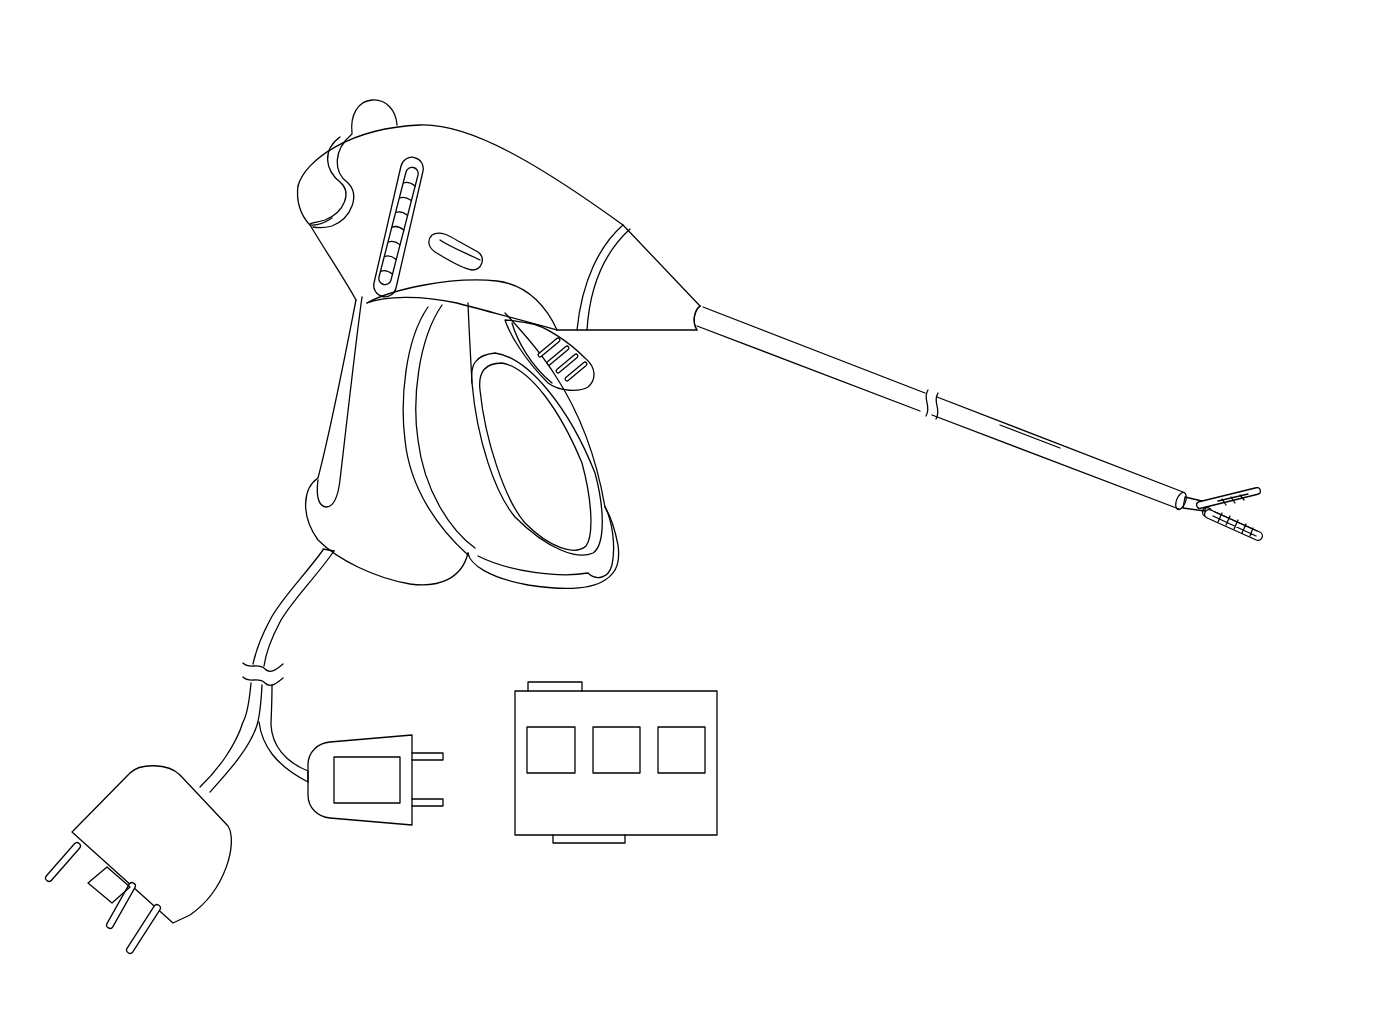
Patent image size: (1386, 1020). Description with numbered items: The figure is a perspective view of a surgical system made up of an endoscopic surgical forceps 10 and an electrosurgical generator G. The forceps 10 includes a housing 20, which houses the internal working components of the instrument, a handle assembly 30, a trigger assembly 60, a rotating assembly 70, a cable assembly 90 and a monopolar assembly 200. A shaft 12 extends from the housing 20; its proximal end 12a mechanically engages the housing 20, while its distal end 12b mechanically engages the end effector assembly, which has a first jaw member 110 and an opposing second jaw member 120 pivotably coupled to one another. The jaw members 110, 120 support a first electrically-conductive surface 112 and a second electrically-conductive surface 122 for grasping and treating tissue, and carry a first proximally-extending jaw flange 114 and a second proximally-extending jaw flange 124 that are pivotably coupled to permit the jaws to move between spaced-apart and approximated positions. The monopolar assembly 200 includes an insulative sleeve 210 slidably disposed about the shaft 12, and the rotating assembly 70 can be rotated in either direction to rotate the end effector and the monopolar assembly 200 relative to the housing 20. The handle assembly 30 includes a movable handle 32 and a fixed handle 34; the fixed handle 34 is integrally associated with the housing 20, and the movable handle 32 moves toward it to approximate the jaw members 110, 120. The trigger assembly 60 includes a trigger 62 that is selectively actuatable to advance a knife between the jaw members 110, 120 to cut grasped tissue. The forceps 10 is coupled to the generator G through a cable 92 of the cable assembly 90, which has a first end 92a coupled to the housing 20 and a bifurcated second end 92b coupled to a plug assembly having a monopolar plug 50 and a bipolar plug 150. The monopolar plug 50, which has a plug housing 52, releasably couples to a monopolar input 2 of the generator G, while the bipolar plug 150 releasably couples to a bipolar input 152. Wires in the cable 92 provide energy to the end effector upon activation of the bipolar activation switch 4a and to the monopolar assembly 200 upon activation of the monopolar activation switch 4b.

The forceps 10 is at (648, 136).
The monopolar input 2 is at (560, 683).
The bipolar activation switch 4a is at (316, 193).
The monopolar activation switch 4b is at (366, 99).
The shaft 12 is at (905, 385).
The proximal end of shaft 12a is at (703, 309).
The distal end of shaft 12b is at (1181, 511).
The housing 20 is at (423, 126).
The handle assembly 30 is at (387, 595).
The movable handle 32 is at (602, 503).
The fixed handle 34 is at (313, 491).
The monopolar plug 50 is at (392, 737).
The plug housing 52 is at (378, 798).
The trigger assembly 60 is at (606, 355).
The trigger 62 is at (592, 389).
The rotating assembly 70 is at (371, 233).
The cable assembly 90 is at (210, 711).
The cable 92 is at (278, 606).
The first end of cable 92a is at (324, 548).
The bifurcated second end of cable 92b is at (308, 794).
The first jaw member 110 is at (1240, 489).
The first electrically-conductive surface 112 is at (1250, 510).
The first proximally-extending jaw flange 114 is at (1203, 500).
The second jaw member 120 is at (1247, 542).
The second electrically-conductive surface 122 is at (1265, 536).
The second proximally-extending jaw flange 124 is at (1193, 520).
The bipolar plug 150 is at (112, 795).
The bipolar input 152 is at (588, 846).
The monopolar assembly 200 is at (1090, 446).
The insulative sleeve 210 is at (1015, 453).
The electrosurgical generator G is at (661, 669).